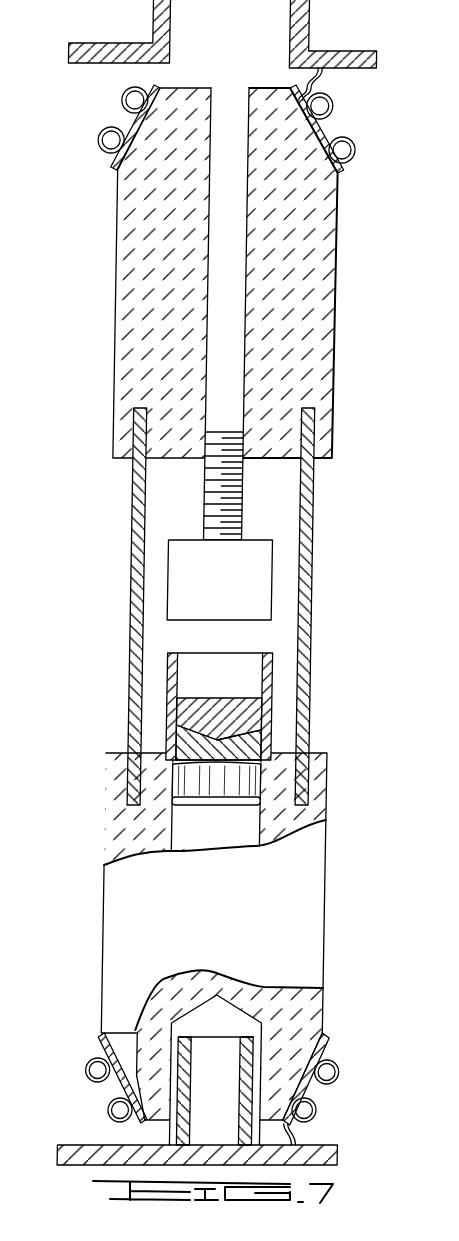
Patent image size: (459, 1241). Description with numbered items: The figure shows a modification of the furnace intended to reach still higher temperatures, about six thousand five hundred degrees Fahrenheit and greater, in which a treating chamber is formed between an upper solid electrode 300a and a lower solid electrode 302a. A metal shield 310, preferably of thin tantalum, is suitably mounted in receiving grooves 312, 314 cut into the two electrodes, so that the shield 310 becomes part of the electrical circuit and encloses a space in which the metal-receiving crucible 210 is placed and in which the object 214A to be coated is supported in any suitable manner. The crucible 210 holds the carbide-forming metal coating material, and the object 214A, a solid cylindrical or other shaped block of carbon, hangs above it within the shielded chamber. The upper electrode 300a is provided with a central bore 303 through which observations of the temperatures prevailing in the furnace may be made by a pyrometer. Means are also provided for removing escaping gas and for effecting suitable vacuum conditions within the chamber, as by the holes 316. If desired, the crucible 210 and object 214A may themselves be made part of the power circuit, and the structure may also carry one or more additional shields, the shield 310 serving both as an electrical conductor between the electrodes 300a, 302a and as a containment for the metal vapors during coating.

The solid electrode 300a is at (326, 231).
The solid electrode 302a is at (315, 947).
The central bore 303 is at (243, 170).
The receiving groove 312 is at (316, 421).
The holes 316 is at (315, 500).
The object to be treated 214A is at (252, 564).
The crucible 210 is at (271, 668).
The metal shield 310 is at (307, 710).
The receiving groove 314 is at (306, 782).